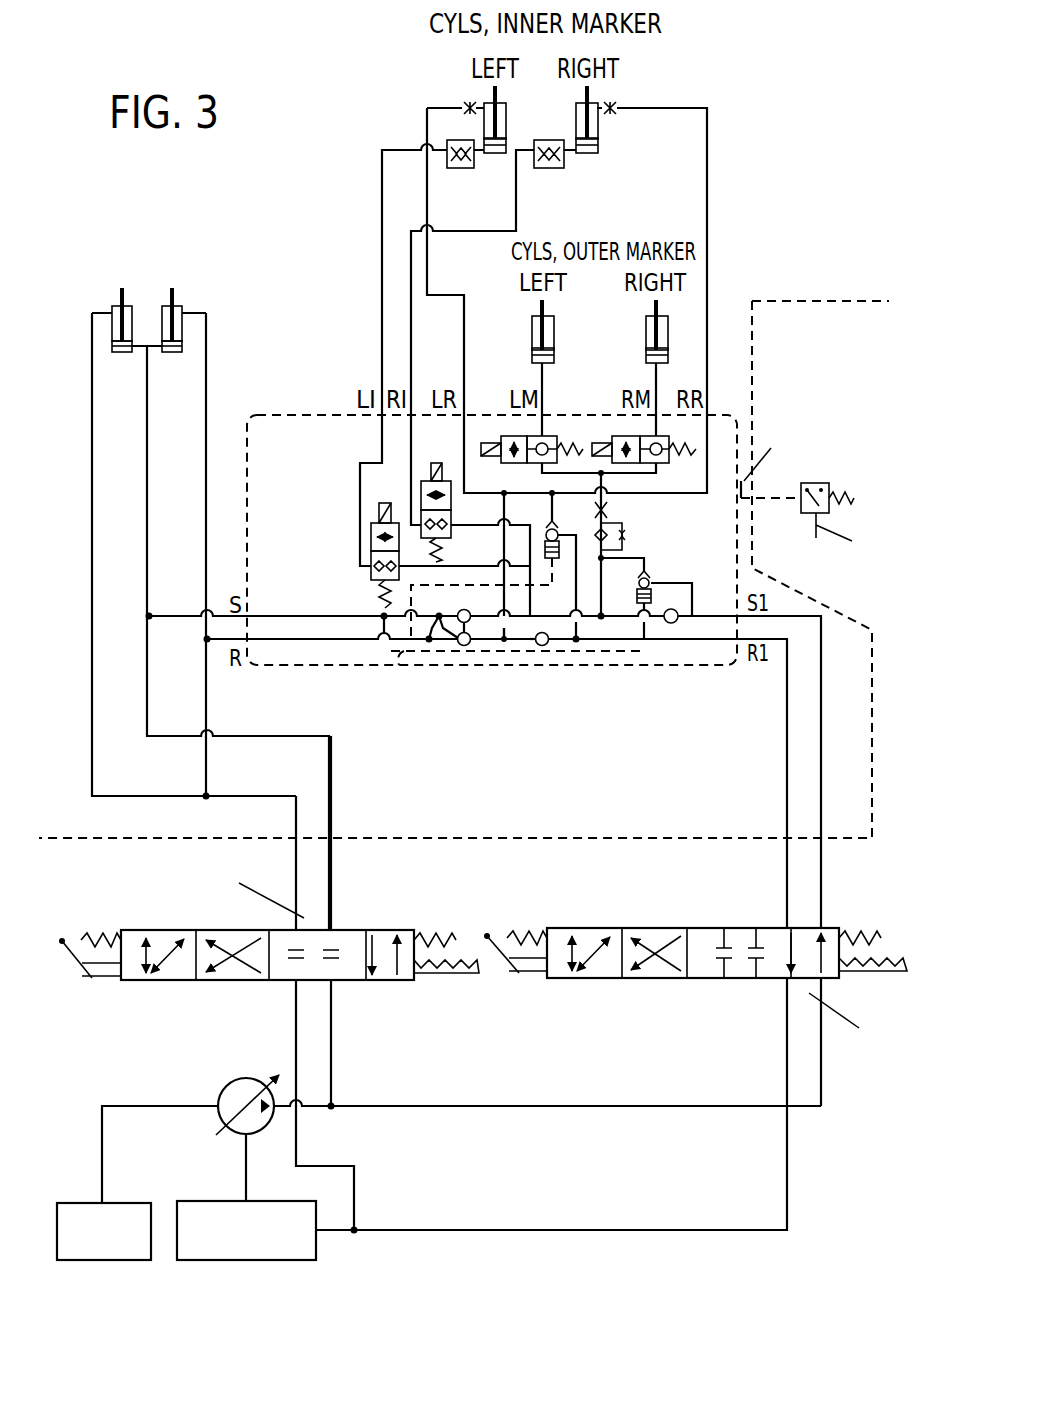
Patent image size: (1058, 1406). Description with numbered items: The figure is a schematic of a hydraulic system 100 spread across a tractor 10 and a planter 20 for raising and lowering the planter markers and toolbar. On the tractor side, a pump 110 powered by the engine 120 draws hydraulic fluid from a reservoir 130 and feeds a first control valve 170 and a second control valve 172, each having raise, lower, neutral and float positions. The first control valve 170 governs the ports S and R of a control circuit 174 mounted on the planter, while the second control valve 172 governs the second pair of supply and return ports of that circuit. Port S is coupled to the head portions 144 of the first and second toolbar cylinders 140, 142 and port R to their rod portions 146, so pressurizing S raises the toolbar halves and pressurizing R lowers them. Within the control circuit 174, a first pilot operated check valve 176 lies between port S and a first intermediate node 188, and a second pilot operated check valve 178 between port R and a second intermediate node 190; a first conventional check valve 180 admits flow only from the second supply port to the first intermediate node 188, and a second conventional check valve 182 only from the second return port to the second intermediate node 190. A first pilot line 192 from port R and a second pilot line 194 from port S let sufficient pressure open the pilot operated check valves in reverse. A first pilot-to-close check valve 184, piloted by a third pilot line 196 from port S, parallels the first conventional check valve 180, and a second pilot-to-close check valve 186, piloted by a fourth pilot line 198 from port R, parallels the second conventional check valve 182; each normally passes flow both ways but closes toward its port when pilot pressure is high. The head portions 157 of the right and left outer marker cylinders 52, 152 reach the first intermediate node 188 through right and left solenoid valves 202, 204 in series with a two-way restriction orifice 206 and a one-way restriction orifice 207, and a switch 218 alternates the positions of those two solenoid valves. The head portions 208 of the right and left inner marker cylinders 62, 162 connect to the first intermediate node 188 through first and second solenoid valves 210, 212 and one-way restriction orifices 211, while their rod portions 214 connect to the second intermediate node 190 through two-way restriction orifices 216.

The tractor 10 is at (64, 914).
The planter 20 is at (65, 722).
The right outer marker cylinder 52 is at (683, 305).
The right inner marker cylinder 62 is at (640, 60).
The hydraulic system 100 is at (832, 1192).
The pump 110 is at (226, 1089).
The engine 120 is at (125, 1204).
The reservoir 130 is at (245, 1263).
The first toolbar cylinder 140 is at (146, 270).
The second toolbar cylinder 142 is at (196, 285).
The head portion 144 is at (123, 356).
The rod portion 146 is at (118, 310).
The left outer marker cylinder 152 is at (525, 300).
The head portion 157 is at (644, 357).
The left inner marker cylinder 162 is at (460, 60).
The first control valve 170 is at (390, 912).
The second control valve 172 is at (545, 1005).
The control circuit 174 is at (318, 414).
The first pilot operated check valve 176 is at (464, 611).
The second pilot operated check valve 178 is at (461, 650).
The first conventional check valve 180 is at (679, 627).
The second conventional check valve 182 is at (548, 650).
The first pilot-to-close check valve 184 is at (656, 580).
The second pilot-to-close check valve 186 is at (501, 567).
The first intermediate node 188 is at (550, 646).
The second intermediate node 190 is at (507, 646).
The first pilot line 192 is at (452, 646).
The second pilot line 194 is at (444, 636).
The third pilot line 196 is at (400, 660).
The fourth pilot line 198 is at (381, 612).
The right solenoid valve 202 is at (505, 425).
The left solenoid valve 204 is at (678, 428).
The two-way restriction orifice 206 is at (616, 511).
The one-way restriction orifice 207 is at (632, 537).
The head portion 208 is at (495, 157).
The first solenoid valve 210 is at (418, 510).
The one-way restriction orifice 211 is at (460, 170).
The second solenoid valve 212 is at (366, 576).
The rod portion 214 is at (486, 132).
The two-way restriction orifice 216 is at (463, 108).
The switch 218 is at (851, 406).